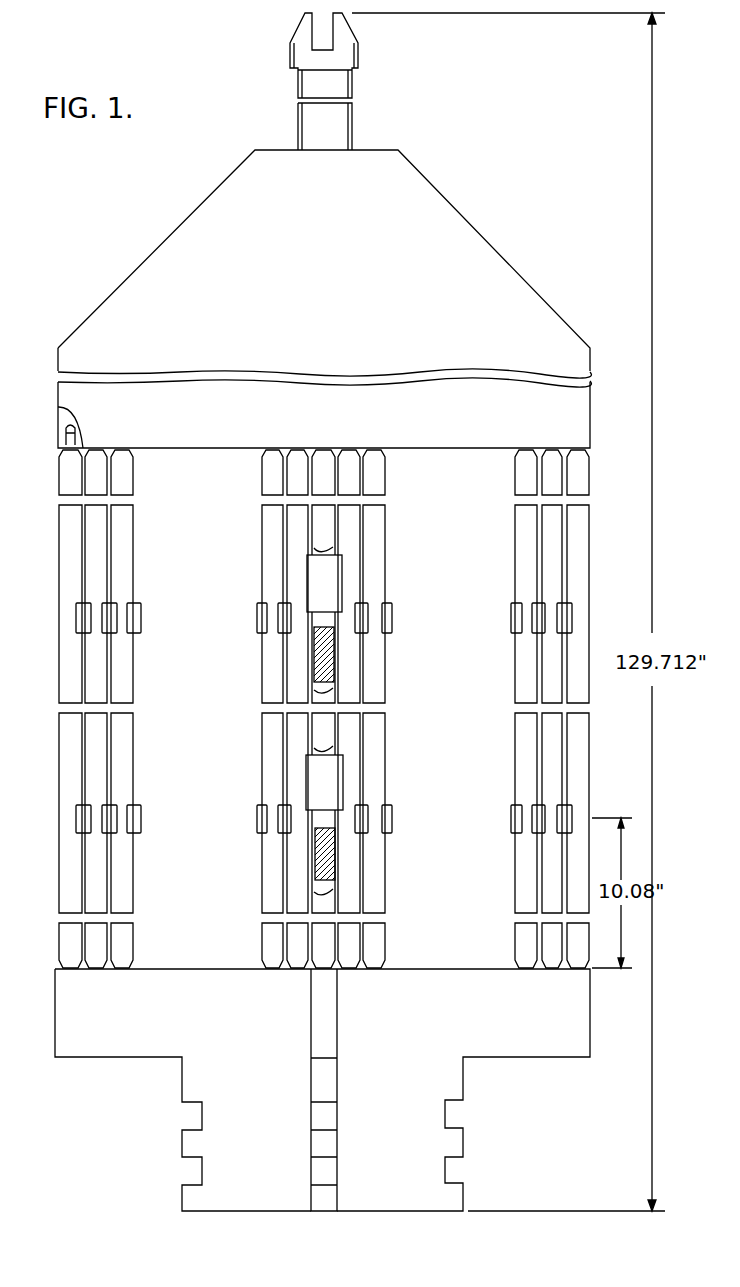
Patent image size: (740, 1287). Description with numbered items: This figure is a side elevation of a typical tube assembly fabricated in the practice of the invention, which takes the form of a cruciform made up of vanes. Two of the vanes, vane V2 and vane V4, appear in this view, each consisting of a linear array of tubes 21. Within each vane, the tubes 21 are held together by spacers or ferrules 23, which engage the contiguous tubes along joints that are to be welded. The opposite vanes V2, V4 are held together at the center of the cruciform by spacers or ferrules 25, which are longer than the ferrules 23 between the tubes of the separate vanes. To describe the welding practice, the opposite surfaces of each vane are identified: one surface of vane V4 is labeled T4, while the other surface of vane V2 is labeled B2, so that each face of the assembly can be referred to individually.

The tubes 21 is at (270, 656).
The spacers or ferrules 23 is at (368, 627).
The spacers or ferrules 25 is at (332, 578).
The surface of vane V4 T4 is at (68, 741).
The vane V4 is at (38, 668).
The vane V2 is at (585, 732).
The surface of vane V2 B2 is at (587, 760).